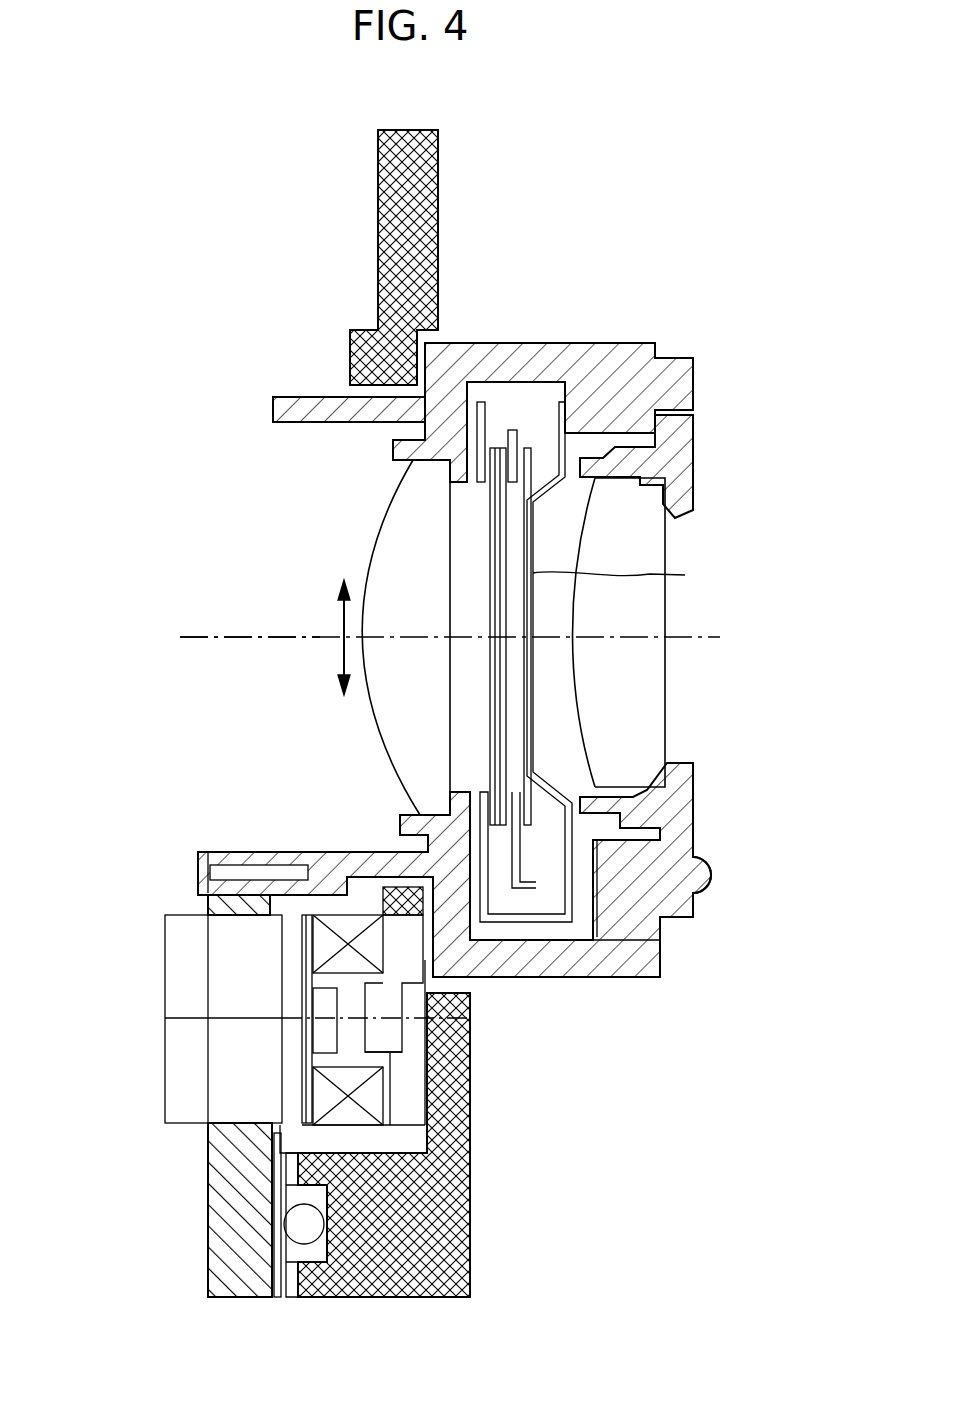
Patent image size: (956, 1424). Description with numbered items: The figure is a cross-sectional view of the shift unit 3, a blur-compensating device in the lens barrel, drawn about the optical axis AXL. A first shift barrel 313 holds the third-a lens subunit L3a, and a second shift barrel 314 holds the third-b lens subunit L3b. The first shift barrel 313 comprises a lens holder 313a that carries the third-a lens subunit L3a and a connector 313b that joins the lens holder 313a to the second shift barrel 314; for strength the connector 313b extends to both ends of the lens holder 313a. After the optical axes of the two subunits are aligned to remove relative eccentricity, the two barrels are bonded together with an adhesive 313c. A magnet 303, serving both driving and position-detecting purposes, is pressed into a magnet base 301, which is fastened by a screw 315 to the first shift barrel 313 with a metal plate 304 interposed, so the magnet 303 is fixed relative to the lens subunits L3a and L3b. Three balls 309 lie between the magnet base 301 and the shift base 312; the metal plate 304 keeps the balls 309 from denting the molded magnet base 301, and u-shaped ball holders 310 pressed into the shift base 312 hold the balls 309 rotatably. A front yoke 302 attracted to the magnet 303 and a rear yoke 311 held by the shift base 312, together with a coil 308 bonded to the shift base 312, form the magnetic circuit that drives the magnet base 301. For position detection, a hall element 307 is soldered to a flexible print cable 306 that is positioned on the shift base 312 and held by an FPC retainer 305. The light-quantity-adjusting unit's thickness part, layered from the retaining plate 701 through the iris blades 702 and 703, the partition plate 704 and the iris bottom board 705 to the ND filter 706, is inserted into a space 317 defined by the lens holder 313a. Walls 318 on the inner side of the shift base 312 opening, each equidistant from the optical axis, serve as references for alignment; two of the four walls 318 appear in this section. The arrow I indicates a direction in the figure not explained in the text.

The shift unit 3 is at (578, 176).
The magnet base 301 is at (227, 1286).
The front yoke 302 is at (177, 1059).
The magnet 303 is at (233, 1103).
The metal plate 304 is at (277, 1300).
The FPC retainer 305 is at (302, 996).
The flexible print cable 306 is at (310, 939).
The hall element 307 is at (337, 1037).
The coil 308 is at (373, 947).
The balls 309 is at (347, 1296).
The ball holders 310 is at (302, 1228).
The rear yoke 311 is at (375, 1030).
The shift base 312 is at (462, 1197).
The first shift barrel 313 is at (687, 398).
The lens holder 313a is at (394, 452).
The connector 313b is at (667, 362).
The adhesive 313c is at (715, 876).
The second shift barrel 314 is at (688, 452).
The screw 315 is at (213, 873).
The space 317 is at (577, 933).
The walls 318 is at (348, 338).
The retaining plate 701 is at (480, 400).
The iris blade 702 is at (500, 440).
The iris blade 703 is at (525, 418).
The partition plate 704 is at (565, 408).
The iris bottom board 705 is at (633, 377).
The ND filter 706 is at (633, 575).
The third-a lens subunit L3a is at (382, 540).
The third-b lens subunit L3b is at (653, 670).
The image shift direction I is at (340, 610).
The optical axis AXL is at (243, 650).